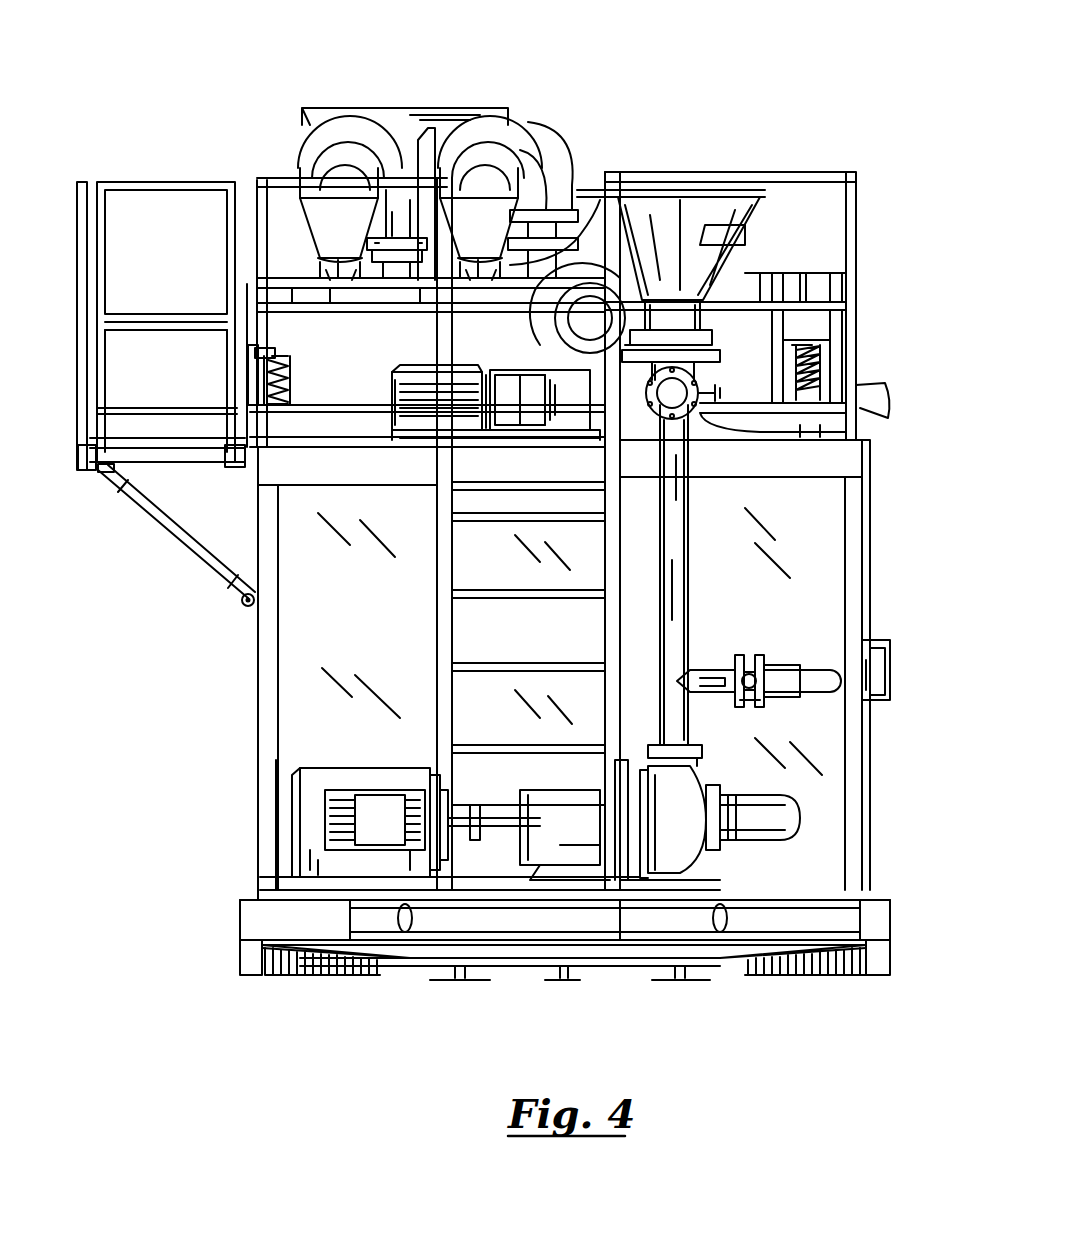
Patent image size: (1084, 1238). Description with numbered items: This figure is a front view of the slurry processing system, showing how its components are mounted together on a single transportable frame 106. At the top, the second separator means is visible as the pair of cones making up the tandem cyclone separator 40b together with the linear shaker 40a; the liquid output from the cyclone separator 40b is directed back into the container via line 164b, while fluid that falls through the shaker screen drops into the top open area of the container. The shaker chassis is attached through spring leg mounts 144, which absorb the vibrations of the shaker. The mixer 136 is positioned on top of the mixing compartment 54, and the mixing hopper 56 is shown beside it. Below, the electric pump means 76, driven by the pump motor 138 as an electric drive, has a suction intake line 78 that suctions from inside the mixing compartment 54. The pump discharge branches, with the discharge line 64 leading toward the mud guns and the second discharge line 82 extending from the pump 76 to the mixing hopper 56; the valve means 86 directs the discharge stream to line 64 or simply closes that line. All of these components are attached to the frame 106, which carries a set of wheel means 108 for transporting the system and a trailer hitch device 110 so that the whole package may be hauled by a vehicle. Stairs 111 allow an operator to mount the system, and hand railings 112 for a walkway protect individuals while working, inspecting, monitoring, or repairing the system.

The linear shaker 40a is at (496, 378).
The tandem cyclone separator 40b is at (322, 150).
The mixing compartment 54 is at (302, 643).
The mixing hopper 56 is at (690, 215).
The discharge line 64 is at (800, 676).
The electric pump means 76 is at (668, 855).
The suction intake line 78 is at (800, 812).
The second discharge line 82 is at (682, 428).
The valve means 86 is at (760, 706).
The frame 106 is at (243, 918).
The wheel means 108 is at (305, 978).
The trailer hitch device 110 is at (562, 985).
The stairs 111 is at (442, 660).
The hand railings 112 is at (178, 186).
The mixer 136 is at (538, 392).
The pump motor 138 is at (380, 835).
The spring leg mounts 144 is at (275, 385).
The line 164b is at (412, 112).